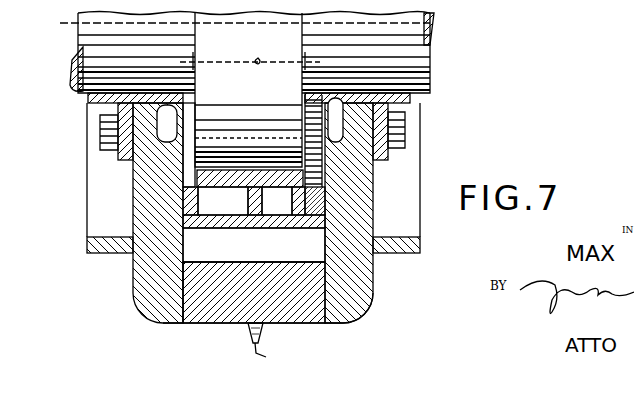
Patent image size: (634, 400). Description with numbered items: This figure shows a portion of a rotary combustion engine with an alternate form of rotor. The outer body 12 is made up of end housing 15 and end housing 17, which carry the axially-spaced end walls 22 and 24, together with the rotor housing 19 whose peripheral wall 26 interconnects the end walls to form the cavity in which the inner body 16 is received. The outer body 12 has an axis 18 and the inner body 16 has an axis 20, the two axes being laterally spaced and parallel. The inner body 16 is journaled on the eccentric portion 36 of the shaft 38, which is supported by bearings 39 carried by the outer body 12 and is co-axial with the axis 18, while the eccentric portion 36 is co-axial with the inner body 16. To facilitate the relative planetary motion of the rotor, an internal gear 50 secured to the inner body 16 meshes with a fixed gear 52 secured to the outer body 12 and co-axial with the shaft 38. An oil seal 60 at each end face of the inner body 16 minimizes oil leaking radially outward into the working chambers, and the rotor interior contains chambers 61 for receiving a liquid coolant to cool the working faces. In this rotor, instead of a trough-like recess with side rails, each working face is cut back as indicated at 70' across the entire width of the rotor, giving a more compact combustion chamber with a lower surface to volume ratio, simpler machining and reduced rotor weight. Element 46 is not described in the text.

The outer body 12 is at (317, 323).
The end housing 15 is at (140, 271).
The inner body or rotor 16 is at (250, 199).
The end housing 17 is at (366, 280).
The axis of outer body 18 is at (88, 24).
The rotor housing 19 is at (229, 318).
The axis of inner body 20 is at (258, 58).
The end wall 22 is at (183, 283).
The end wall 24 is at (325, 288).
The peripheral wall 26 is at (276, 256).
The eccentric portion 36 is at (262, 89).
The shaft 38 is at (95, 70).
The bearings 39 is at (88, 98).
The nozzle 46 is at (264, 328).
The internal gear 50 is at (322, 184).
The fixed gear 52 is at (332, 118).
The oil seal 60 is at (323, 218).
The chambers 61 is at (185, 196).
The cut-back recess 70' is at (254, 245).